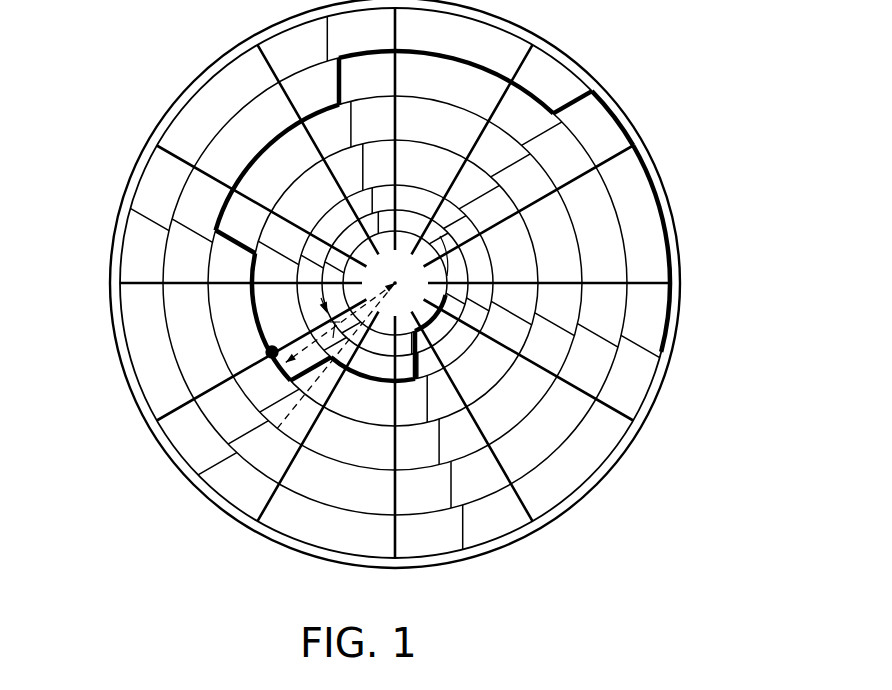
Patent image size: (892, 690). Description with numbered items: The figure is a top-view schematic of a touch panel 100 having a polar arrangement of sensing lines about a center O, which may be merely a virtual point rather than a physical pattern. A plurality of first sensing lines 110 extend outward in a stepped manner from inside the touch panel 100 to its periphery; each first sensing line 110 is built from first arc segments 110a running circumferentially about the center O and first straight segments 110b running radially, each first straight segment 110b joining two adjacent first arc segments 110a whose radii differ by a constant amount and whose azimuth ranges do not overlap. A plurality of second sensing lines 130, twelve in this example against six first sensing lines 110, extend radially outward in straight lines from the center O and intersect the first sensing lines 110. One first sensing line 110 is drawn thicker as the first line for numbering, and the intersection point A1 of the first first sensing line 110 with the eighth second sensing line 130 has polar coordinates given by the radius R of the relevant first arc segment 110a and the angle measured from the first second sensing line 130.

The touch panel 100 is at (722, 535).
The first sensing line 110 is at (484, 194).
The first arc segment 110a is at (630, 130).
The first straight segment 110b is at (587, 93).
The second sensing line 130 is at (627, 183).
The intersection point A1 is at (266, 351).
The center O is at (397, 284).
The radius R is at (326, 374).